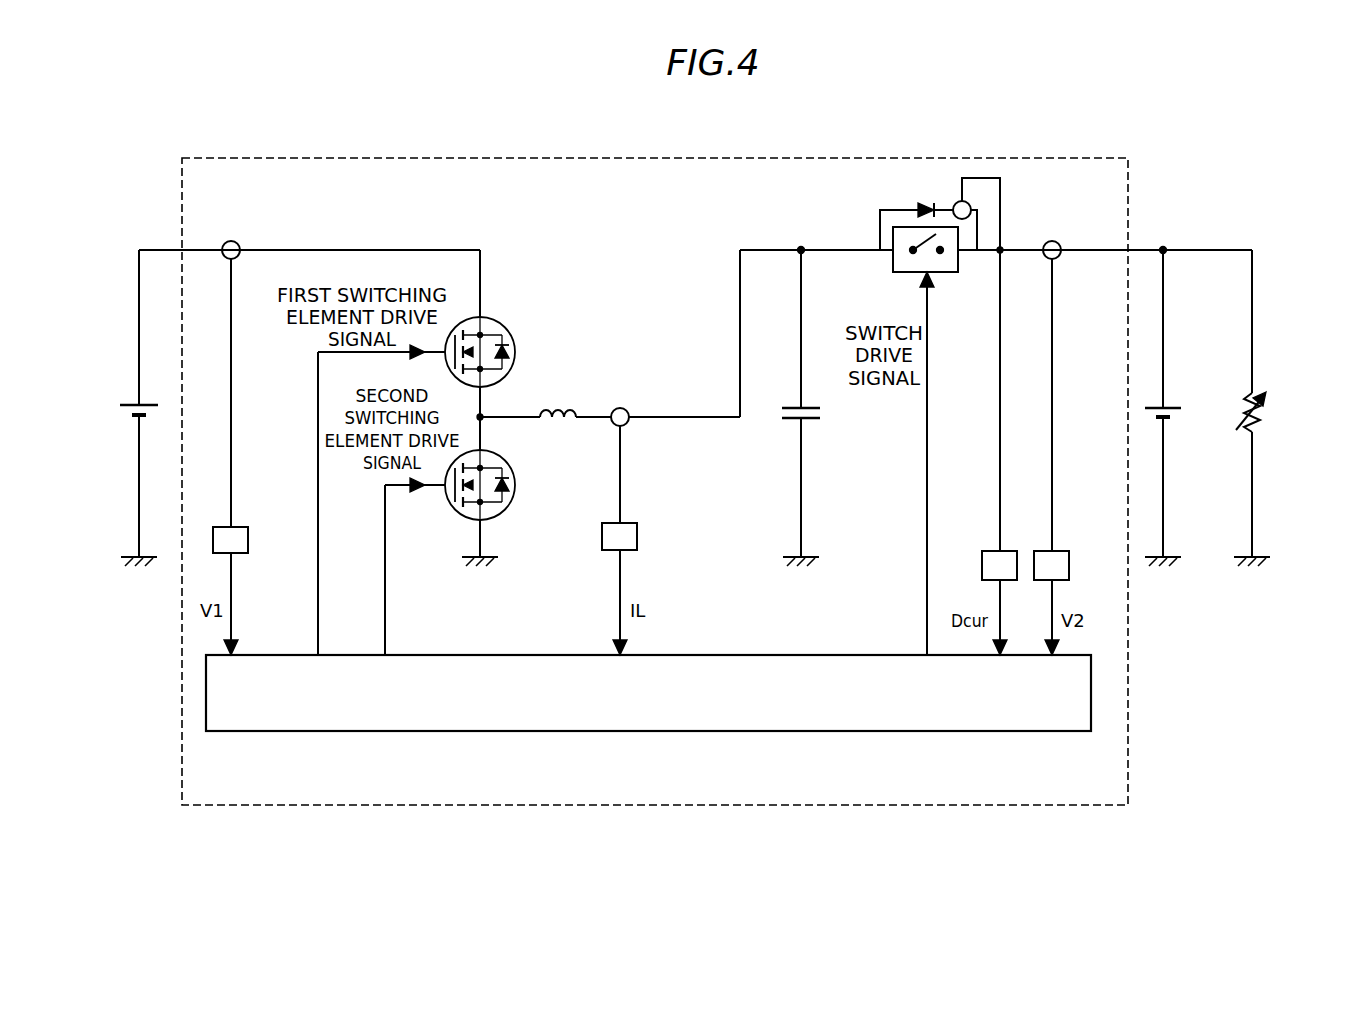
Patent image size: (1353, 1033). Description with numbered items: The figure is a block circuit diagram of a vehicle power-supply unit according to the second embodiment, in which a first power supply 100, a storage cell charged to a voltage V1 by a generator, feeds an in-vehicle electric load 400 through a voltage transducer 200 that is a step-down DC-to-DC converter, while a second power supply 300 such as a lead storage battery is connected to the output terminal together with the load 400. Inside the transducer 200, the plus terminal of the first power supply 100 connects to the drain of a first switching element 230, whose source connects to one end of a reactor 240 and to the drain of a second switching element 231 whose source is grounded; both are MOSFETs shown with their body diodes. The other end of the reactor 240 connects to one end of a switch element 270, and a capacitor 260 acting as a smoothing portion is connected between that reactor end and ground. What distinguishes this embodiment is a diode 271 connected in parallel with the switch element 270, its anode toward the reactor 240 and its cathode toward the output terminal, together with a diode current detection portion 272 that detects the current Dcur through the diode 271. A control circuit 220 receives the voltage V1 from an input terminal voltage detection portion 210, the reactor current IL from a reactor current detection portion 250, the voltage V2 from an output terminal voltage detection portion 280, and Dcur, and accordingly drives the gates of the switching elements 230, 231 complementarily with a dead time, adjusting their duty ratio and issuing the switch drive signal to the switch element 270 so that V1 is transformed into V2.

The first power supply 100 is at (130, 398).
The voltage transducer 200 is at (697, 155).
The input terminal voltage detection portion 210 is at (248, 527).
The control circuit 220 is at (660, 736).
The first switching element 230 is at (506, 320).
The second switching element 231 is at (506, 524).
The reactor 240 is at (562, 400).
The reactor current detection portion 250 is at (600, 523).
The capacitor 260 is at (814, 429).
The switch element 270 is at (890, 274).
The diode 271 is at (918, 210).
The diode current detection portion 272 is at (982, 552).
The output terminal voltage detection portion 280 is at (1068, 552).
The second power supply 300 is at (1174, 400).
The electric load 400 is at (1272, 402).